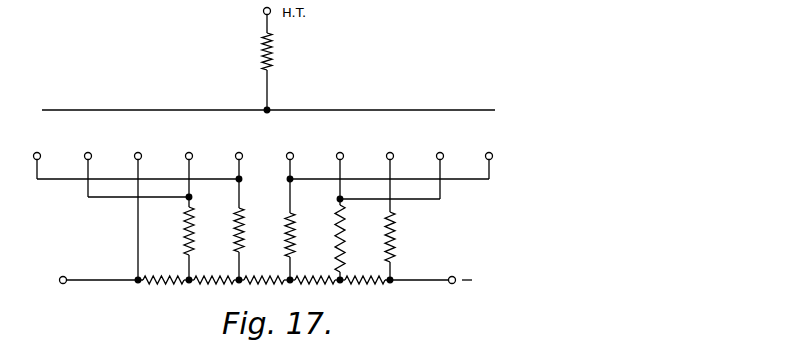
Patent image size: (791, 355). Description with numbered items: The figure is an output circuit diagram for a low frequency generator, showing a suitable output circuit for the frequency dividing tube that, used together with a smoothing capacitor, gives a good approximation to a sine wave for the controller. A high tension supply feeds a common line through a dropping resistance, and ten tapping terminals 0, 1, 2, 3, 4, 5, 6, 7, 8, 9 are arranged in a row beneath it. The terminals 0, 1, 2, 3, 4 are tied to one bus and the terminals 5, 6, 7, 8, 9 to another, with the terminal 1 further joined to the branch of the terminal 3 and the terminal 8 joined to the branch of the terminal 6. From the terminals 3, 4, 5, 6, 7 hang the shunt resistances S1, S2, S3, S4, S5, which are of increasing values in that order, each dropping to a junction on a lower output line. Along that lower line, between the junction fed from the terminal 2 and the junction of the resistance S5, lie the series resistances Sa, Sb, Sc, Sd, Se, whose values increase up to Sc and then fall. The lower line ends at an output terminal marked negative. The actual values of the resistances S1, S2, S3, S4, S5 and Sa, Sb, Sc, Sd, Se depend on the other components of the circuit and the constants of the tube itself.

The terminal 0 is at (37, 157).
The terminal 1 is at (88, 166).
The terminal 2 is at (138, 208).
The terminal 3 is at (189, 171).
The terminal 4 is at (239, 172).
The terminal 5 is at (290, 174).
The terminal 6 is at (340, 170).
The terminal 7 is at (390, 174).
The terminal 8 is at (440, 167).
The terminal 9 is at (489, 157).
The resistance S1 is at (202, 243).
The resistance S2 is at (252, 244).
The resistance S3 is at (303, 246).
The resistance S4 is at (353, 242).
The resistance S5 is at (404, 246).
The resistance Sa is at (163, 289).
The resistance Sb is at (214, 289).
The resistance Sc is at (264, 289).
The resistance Sd is at (315, 289).
The resistance Se is at (365, 289).